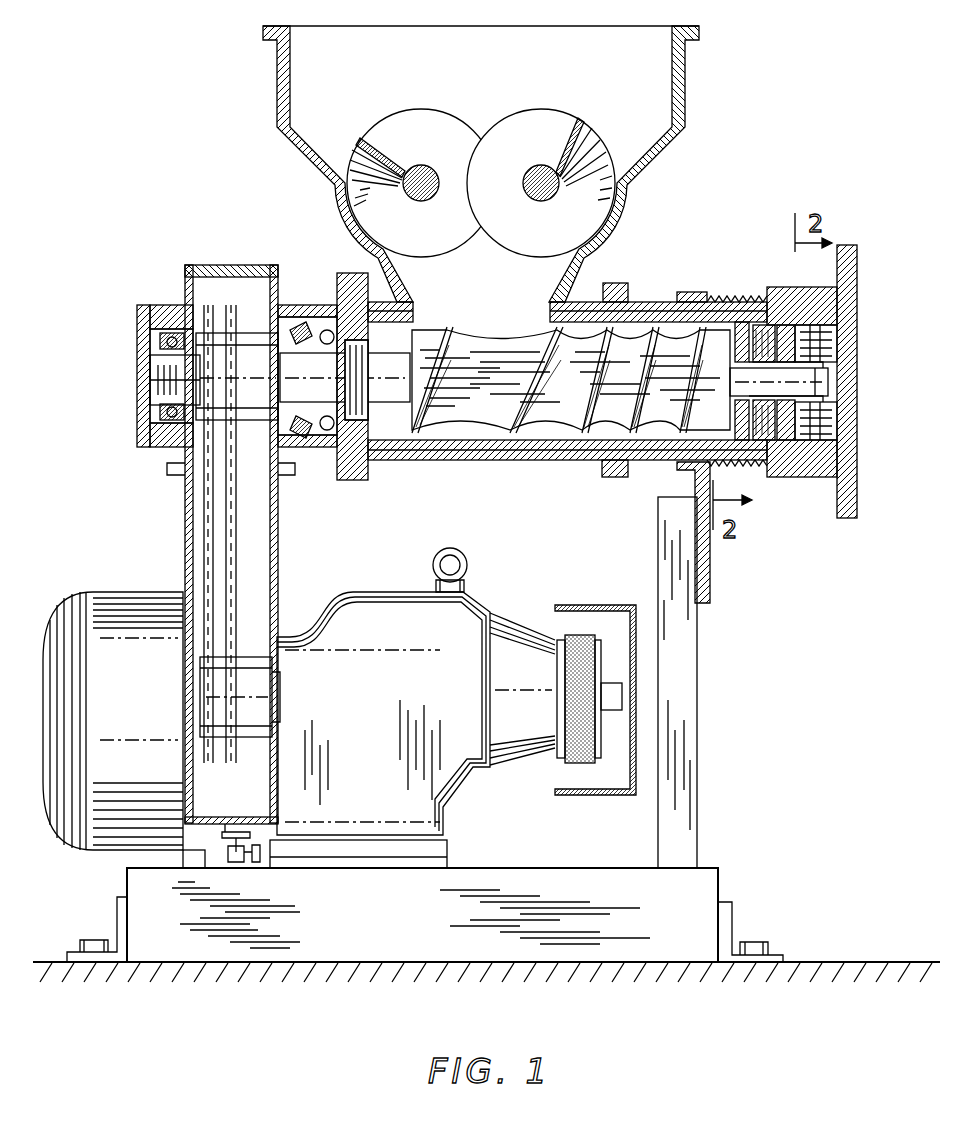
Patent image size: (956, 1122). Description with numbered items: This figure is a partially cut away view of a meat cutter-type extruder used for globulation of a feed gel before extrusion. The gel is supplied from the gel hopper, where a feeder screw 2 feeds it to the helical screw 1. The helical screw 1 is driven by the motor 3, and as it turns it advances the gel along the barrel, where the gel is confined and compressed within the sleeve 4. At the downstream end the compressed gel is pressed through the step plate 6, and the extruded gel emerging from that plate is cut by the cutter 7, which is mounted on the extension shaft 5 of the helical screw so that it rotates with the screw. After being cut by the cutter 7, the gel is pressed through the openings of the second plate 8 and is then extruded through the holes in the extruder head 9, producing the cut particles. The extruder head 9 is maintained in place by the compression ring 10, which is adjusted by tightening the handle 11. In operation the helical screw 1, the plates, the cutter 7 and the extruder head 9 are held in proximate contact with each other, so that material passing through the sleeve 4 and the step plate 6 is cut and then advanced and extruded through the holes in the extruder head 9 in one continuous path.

The helical screw 1 is at (632, 352).
The feeder screw 2 is at (388, 125).
The motor 3 is at (362, 600).
The sleeve 4 is at (662, 304).
The extension shaft 5 is at (810, 382).
The step plate 6 is at (742, 330).
The cutter 7 is at (762, 330).
The second plate 8 is at (787, 330).
The extruder head 9 is at (808, 340).
The compression ring 10 is at (825, 430).
The tightening handle 11 is at (850, 262).